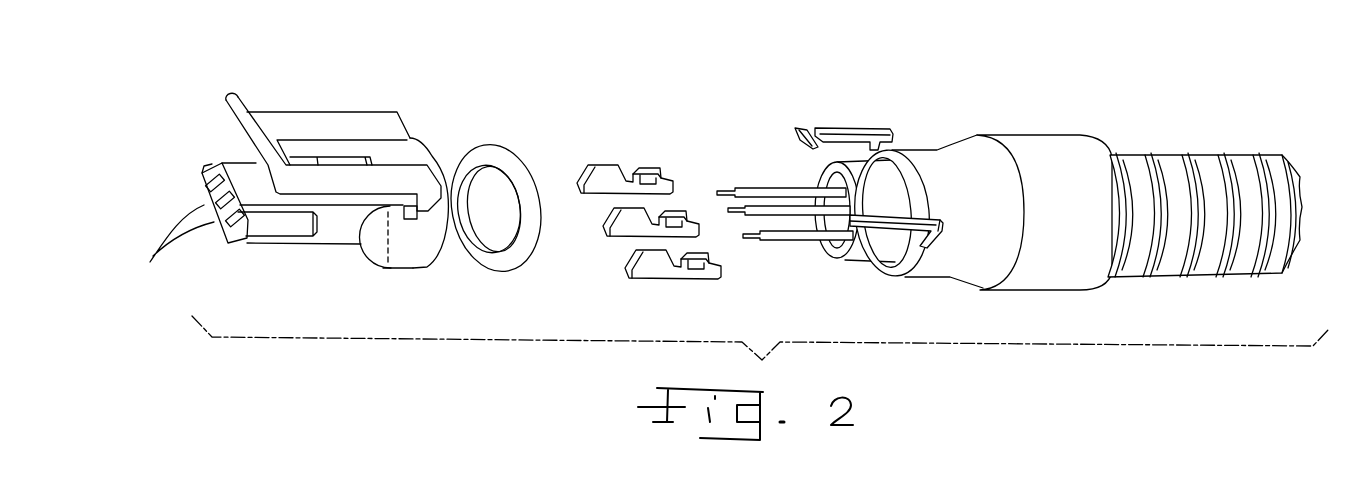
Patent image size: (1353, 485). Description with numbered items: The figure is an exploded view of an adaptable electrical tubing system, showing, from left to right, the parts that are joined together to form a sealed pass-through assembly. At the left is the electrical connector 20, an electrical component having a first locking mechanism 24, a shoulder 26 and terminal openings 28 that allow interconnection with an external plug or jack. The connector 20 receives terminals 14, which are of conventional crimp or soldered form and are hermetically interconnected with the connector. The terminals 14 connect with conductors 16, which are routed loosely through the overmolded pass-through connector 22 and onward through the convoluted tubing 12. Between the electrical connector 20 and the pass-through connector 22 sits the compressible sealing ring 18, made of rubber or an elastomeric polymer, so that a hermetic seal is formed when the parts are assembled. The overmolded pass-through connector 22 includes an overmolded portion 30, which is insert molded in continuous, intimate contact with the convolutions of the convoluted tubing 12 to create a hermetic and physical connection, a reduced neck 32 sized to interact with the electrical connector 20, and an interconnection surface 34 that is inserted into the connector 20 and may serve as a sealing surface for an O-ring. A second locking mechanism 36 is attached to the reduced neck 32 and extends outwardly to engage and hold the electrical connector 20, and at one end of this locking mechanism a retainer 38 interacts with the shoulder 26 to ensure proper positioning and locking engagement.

The convoluted tubing 12 is at (1193, 155).
The terminals 14 is at (620, 268).
The conductors 16 is at (783, 232).
The sealing ring 18 is at (500, 145).
The electrical connector 20 is at (421, 133).
The overmolded pass-through connector 22 is at (1012, 115).
The first locking mechanism 24 is at (292, 112).
The shoulder 26 is at (416, 220).
The terminal openings 28 is at (170, 237).
The overmolded portion 30 is at (1072, 136).
The reduced neck 32 is at (907, 149).
The interconnection surface 34 is at (857, 262).
The second locking mechanism 36 is at (843, 130).
The retainer 38 is at (822, 128).